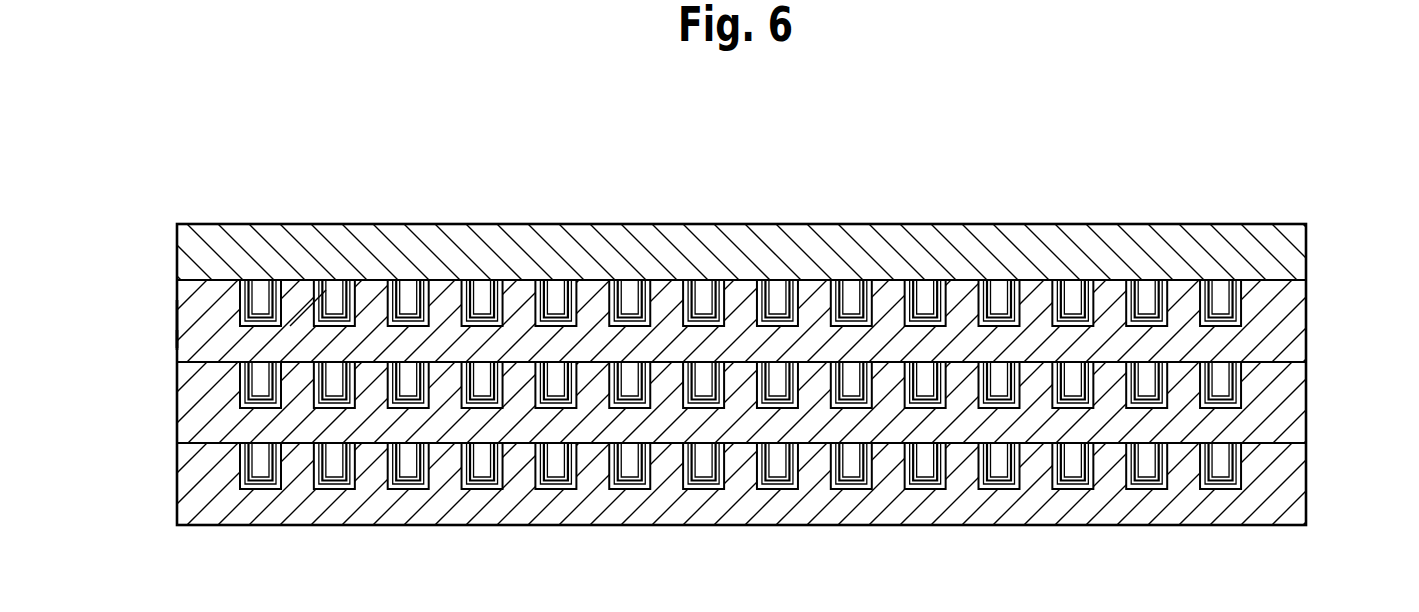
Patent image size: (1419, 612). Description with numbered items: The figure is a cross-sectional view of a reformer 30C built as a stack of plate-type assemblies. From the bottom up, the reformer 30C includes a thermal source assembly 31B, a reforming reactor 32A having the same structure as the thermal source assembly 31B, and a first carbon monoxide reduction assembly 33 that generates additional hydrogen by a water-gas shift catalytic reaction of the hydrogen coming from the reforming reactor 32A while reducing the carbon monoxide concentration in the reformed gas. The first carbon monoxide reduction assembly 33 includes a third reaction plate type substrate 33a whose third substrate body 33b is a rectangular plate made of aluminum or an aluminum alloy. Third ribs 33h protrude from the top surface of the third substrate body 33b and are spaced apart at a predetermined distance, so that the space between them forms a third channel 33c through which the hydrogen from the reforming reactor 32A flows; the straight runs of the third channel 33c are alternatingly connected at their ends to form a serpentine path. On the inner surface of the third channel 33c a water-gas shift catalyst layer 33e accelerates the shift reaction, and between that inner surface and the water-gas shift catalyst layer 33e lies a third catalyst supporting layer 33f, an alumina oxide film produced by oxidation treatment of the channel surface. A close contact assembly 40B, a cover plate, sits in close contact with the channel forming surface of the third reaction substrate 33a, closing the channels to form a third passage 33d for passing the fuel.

The reformer 30C is at (766, 145).
The close contact assembly 40B is at (1327, 252).
The first carbon monoxide reduction assembly 33 is at (1327, 318).
The reforming reactor 32A is at (1327, 403).
The thermal source assembly 31B is at (1327, 488).
The third reaction plate type substrate 33a is at (162, 339).
The third substrate body 33b is at (178, 324).
The third channel 33c is at (255, 327).
The third passage 33d is at (242, 300).
The water-gas shift catalyst layer 33e is at (248, 295).
The third catalyst supporting layer 33f is at (243, 291).
The third ribs 33h is at (305, 285).